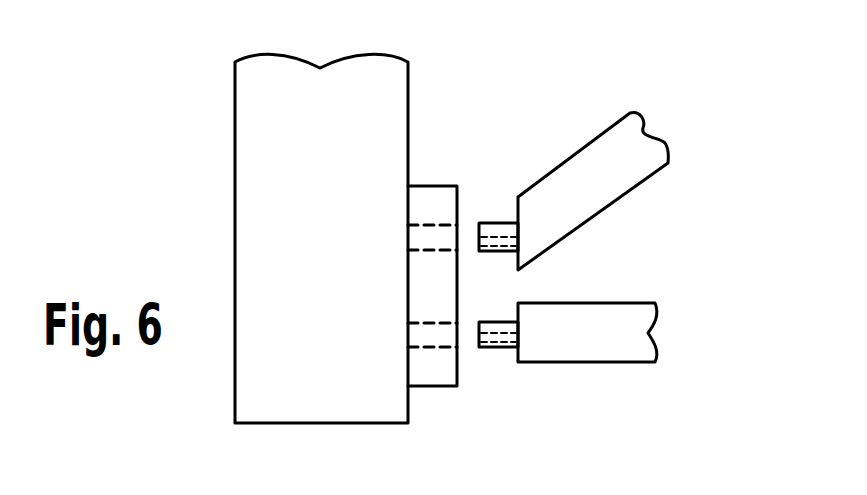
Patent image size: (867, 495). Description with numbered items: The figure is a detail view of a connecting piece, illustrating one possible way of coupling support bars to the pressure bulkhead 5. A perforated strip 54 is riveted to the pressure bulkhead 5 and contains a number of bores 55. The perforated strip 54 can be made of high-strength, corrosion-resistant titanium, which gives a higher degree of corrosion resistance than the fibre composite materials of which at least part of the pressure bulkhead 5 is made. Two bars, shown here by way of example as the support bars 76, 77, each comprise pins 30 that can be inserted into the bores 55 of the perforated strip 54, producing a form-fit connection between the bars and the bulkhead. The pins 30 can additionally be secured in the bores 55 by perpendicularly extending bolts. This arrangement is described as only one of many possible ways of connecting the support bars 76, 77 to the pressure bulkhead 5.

The pressure bulkhead 5 is at (258, 223).
The perforated strip 54 is at (434, 203).
The bores 55 is at (433, 330).
The pins 30 is at (494, 236).
The support bar 76 is at (603, 342).
The support bar 77 is at (606, 155).